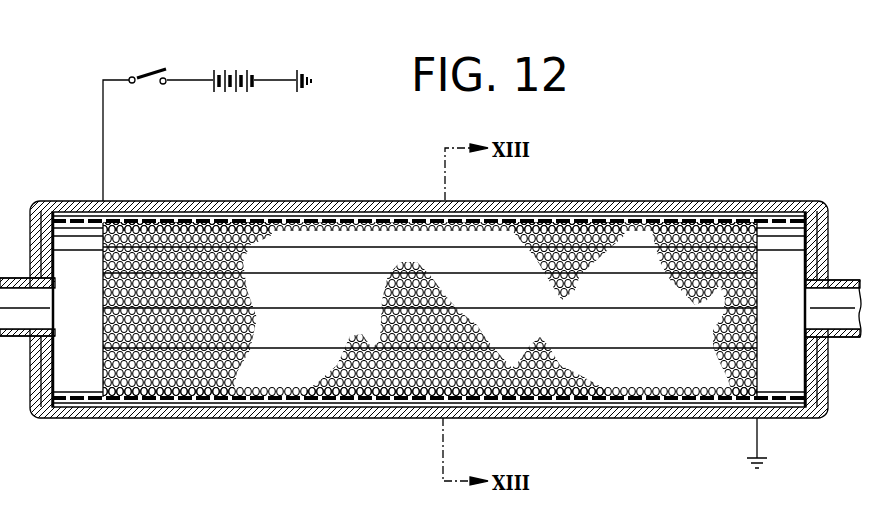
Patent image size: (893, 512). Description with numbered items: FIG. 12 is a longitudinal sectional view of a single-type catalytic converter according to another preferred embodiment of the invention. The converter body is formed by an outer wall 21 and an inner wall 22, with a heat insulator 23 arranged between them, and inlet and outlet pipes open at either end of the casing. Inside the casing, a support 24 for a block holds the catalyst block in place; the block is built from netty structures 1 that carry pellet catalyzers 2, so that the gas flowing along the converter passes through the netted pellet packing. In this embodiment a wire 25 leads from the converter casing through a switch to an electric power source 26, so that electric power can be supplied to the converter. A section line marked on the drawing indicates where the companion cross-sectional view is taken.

The netty structure 1 is at (270, 245).
The pellet catalyzer 2 is at (179, 222).
The outer wall 21 is at (125, 418).
The inner wall 22 is at (87, 418).
The heat insulator 23 is at (56, 418).
The support for a block 24 is at (231, 418).
The wire 25 is at (103, 116).
The electric power source 26 is at (228, 73).